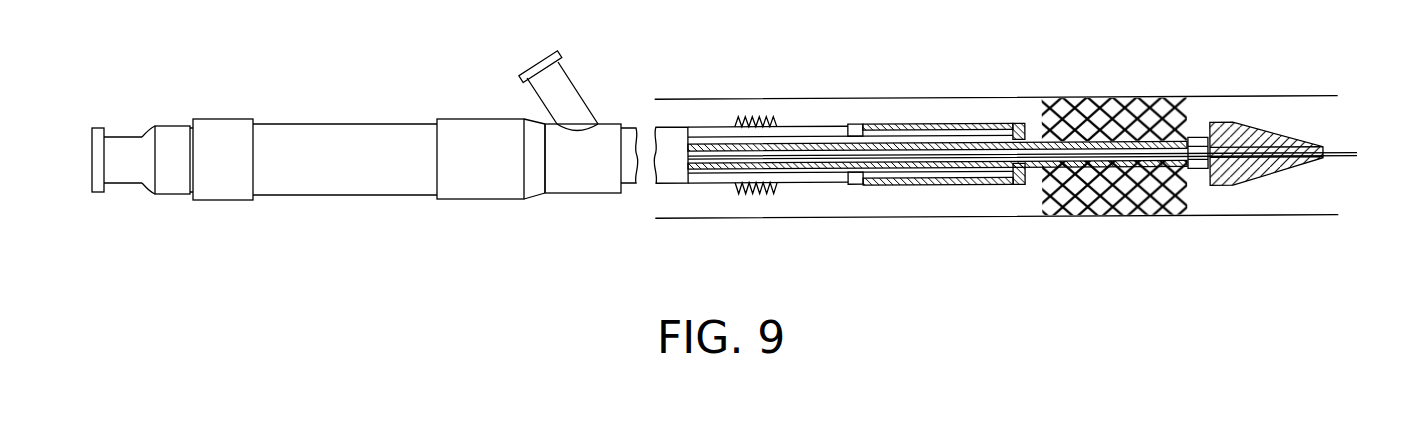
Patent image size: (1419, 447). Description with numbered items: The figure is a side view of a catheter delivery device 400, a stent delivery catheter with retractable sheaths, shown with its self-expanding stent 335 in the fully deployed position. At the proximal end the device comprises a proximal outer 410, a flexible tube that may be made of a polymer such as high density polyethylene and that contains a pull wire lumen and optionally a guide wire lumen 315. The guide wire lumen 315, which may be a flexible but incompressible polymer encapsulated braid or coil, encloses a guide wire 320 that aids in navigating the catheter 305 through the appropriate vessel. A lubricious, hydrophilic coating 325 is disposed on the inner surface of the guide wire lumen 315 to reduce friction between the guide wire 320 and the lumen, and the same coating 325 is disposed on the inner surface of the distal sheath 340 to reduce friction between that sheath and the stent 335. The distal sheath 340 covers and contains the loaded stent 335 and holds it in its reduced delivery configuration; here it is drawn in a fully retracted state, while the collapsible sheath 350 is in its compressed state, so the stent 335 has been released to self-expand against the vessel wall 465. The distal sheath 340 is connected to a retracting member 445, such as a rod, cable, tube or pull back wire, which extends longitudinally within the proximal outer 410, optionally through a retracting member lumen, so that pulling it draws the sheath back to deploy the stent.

The catheter 305 is at (817, 115).
The guide wire lumen 315 is at (1000, 170).
The guide wire 320 is at (1357, 152).
The lubricious coating 325 is at (902, 177).
The self-expanding stent 335 is at (1148, 98).
The distal sheath 340 is at (902, 123).
The collapsible sheath 350 is at (764, 117).
The catheter delivery device 400 is at (575, 212).
The proximal outer 410 is at (668, 183).
The retracting member 445 is at (703, 120).
The vessel wall 465 is at (990, 98).